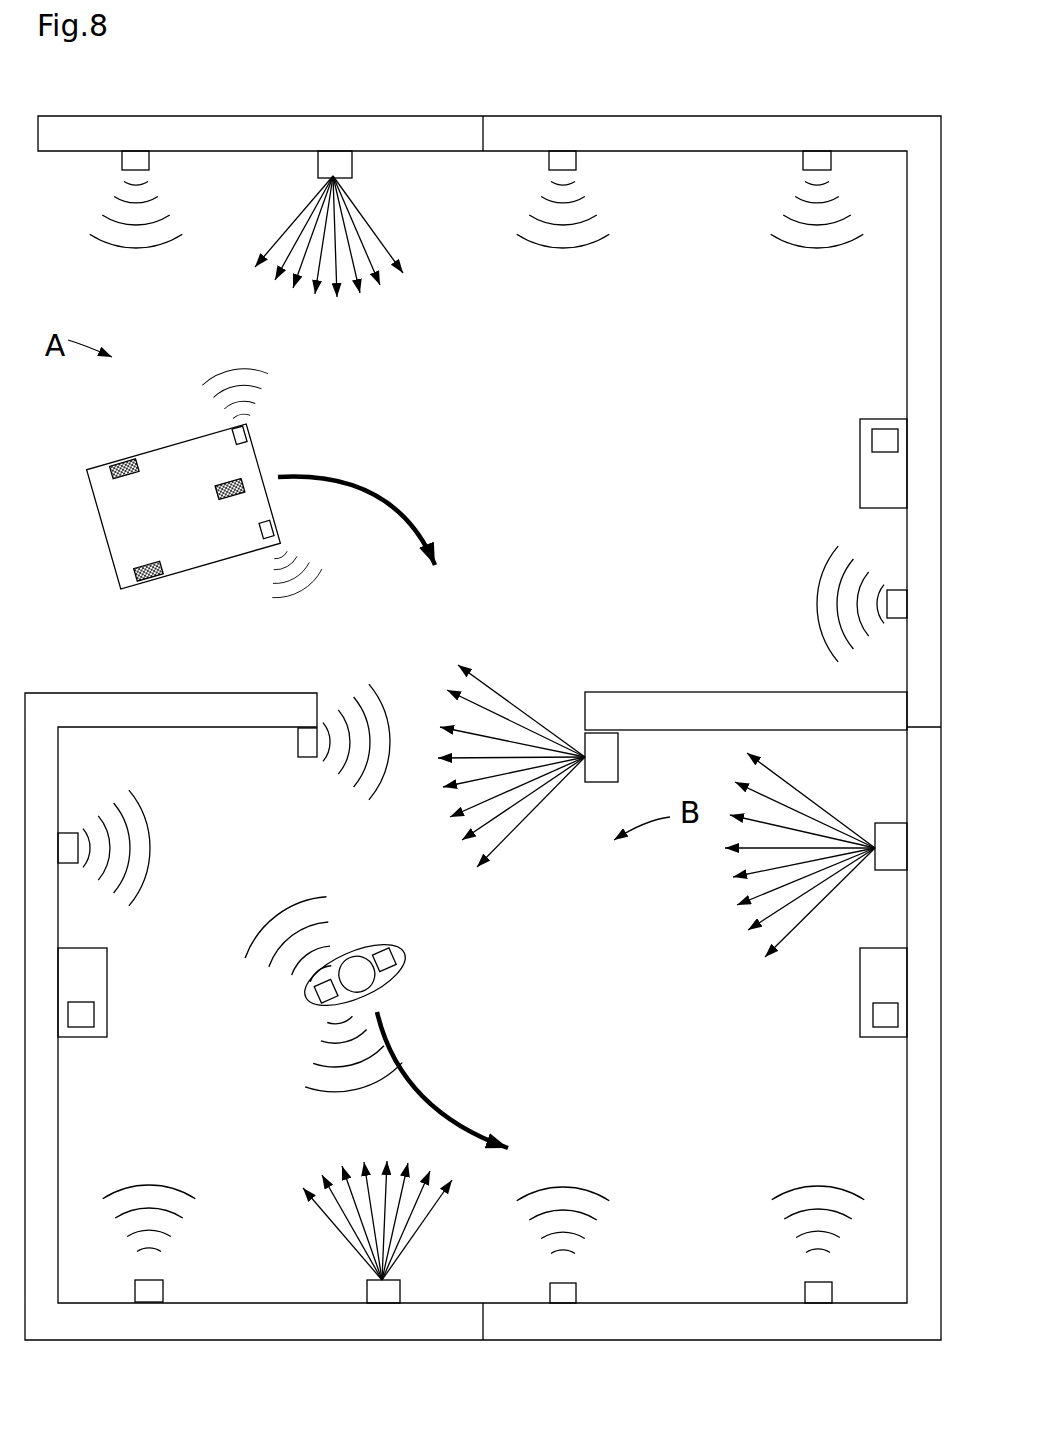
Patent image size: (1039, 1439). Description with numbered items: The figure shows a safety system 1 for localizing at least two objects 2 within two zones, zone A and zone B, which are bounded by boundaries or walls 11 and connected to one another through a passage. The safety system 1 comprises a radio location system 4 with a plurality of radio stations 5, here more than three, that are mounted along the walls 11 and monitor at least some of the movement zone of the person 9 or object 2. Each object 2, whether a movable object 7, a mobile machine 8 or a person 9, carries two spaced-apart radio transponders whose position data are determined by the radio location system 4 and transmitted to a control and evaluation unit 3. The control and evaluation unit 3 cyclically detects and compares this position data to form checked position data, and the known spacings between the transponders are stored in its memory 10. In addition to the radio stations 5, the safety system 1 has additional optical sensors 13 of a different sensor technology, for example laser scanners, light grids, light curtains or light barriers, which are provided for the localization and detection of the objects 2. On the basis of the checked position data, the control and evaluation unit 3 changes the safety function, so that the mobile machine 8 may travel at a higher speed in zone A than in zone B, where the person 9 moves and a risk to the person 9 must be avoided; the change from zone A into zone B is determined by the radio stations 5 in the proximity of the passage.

The safety system 1 is at (768, 76).
The object 2 is at (291, 756).
The control and evaluation unit 3 is at (866, 419).
The radio location system 4 is at (516, 298).
The radio stations 5 is at (127, 158).
The movable object 7 is at (222, 568).
The movable machine 8 is at (190, 578).
The person 9 is at (386, 988).
The memory 10 is at (891, 428).
The wall/boundary 11 is at (907, 326).
The optical sensor 13 is at (323, 166).